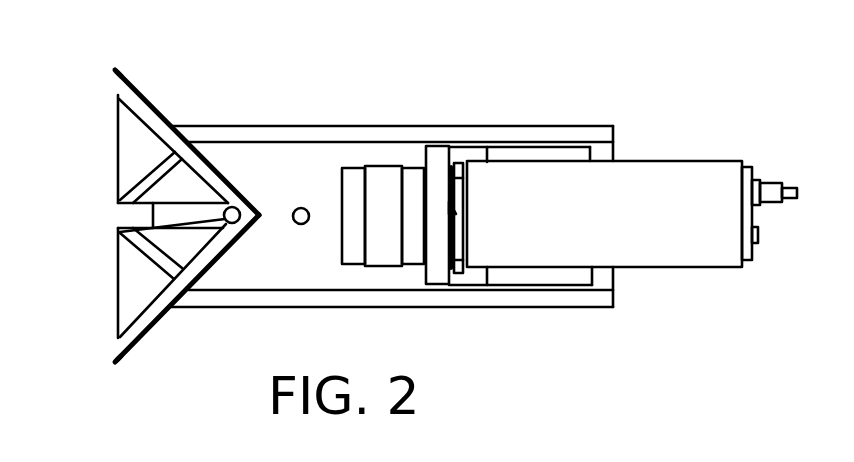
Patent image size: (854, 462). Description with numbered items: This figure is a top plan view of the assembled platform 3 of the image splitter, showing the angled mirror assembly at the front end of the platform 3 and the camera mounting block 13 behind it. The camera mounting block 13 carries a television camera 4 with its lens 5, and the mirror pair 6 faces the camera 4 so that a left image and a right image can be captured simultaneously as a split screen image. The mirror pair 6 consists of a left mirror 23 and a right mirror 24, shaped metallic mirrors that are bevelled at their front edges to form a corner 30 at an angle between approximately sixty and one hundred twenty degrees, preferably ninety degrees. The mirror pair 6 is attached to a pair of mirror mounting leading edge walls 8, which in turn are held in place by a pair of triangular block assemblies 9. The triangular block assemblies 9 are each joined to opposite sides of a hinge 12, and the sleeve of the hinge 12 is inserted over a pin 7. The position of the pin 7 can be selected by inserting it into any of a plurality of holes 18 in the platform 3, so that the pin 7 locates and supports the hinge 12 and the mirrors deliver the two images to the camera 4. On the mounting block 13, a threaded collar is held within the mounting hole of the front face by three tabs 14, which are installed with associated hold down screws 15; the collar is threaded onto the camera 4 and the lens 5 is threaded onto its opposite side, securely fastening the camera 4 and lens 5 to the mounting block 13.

The platform 3 is at (520, 153).
The television camera 4 is at (605, 192).
The lens 5 is at (388, 180).
The mirror pair 6 is at (147, 100).
The pin 7 is at (225, 218).
The mirror mounting leading edge walls 8 is at (122, 88).
The triangular block assemblies 9 is at (137, 167).
The hinge 12 is at (215, 231).
The camera mounting block 13 is at (438, 155).
The tabs 14 is at (452, 208).
The hold down screws 15 is at (425, 145).
The holes 18 is at (305, 224).
The left mirror 23 is at (143, 337).
The right mirror 24 is at (188, 142).
The corner 30 is at (261, 216).